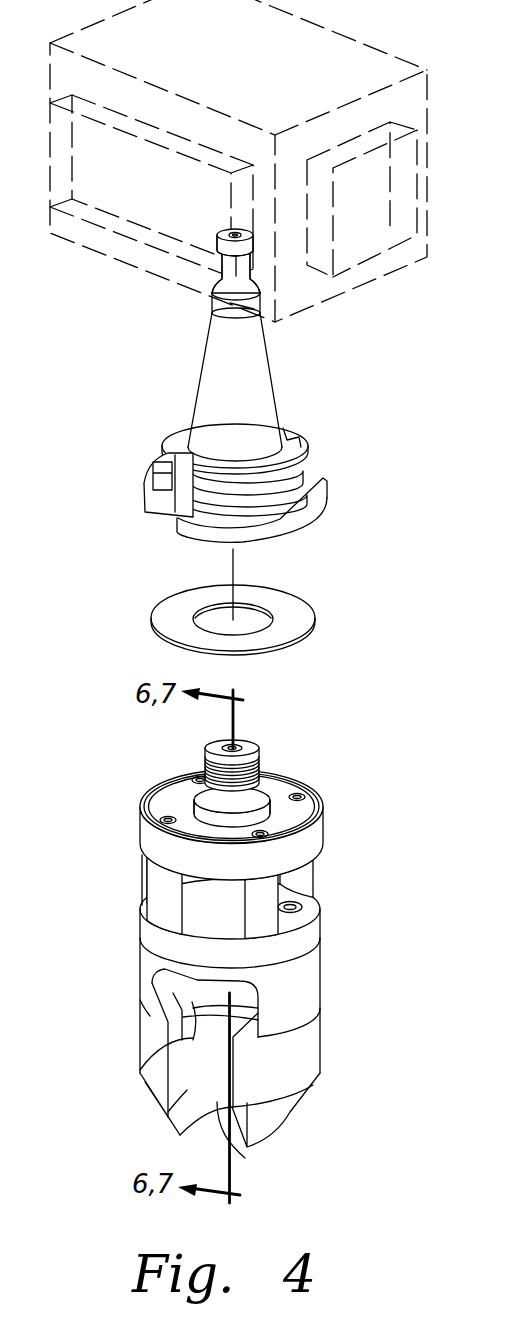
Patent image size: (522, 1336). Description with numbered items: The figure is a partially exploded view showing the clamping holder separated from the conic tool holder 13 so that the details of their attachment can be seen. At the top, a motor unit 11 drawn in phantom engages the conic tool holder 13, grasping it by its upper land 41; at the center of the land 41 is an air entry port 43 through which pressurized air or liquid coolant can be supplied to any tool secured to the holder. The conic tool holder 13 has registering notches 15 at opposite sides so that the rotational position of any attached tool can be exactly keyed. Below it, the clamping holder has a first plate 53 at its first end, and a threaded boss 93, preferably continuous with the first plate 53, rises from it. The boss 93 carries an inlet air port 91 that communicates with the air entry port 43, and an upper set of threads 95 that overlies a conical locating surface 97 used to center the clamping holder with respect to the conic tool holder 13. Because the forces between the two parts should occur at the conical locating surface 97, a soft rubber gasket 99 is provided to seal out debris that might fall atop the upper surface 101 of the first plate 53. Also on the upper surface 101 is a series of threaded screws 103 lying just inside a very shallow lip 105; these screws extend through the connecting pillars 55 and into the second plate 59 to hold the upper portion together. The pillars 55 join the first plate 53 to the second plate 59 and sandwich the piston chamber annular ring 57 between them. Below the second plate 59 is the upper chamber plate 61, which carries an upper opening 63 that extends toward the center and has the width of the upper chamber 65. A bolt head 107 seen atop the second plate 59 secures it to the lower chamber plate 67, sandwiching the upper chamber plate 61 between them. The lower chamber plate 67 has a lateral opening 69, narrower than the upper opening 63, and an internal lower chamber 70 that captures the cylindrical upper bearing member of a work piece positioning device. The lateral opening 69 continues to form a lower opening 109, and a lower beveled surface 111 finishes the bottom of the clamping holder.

The motor unit 11 is at (380, 50).
The conic tool holder 13 is at (197, 387).
The registering notches 15 is at (288, 440).
The upper land 41 is at (215, 248).
The air entry port 43 is at (234, 231).
The first plate 53 is at (322, 830).
The connecting pillars 55 is at (148, 873).
The piston chamber annular ring 57 is at (196, 890).
The second plate 59 is at (318, 920).
The upper chamber plate 61 is at (320, 983).
The upper opening 63 is at (160, 999).
The upper chamber 65 is at (160, 975).
The lower chamber plate 67 is at (318, 1040).
The lateral opening 69 is at (170, 1113).
The lower chamber 70 is at (168, 1070).
The inlet air port 91 is at (236, 746).
The threaded boss 93 is at (201, 753).
The upper set of threads 95 is at (266, 786).
The conical locating surface 97 is at (219, 804).
The soft rubber gasket 99 is at (316, 612).
The upper surface 101 is at (300, 810).
The threaded screws 103 is at (198, 778).
The shallow lip 105 is at (148, 802).
The bolt head 107 is at (284, 904).
The lower opening 109 is at (247, 1160).
The lower beveled surface 111 is at (290, 1110).